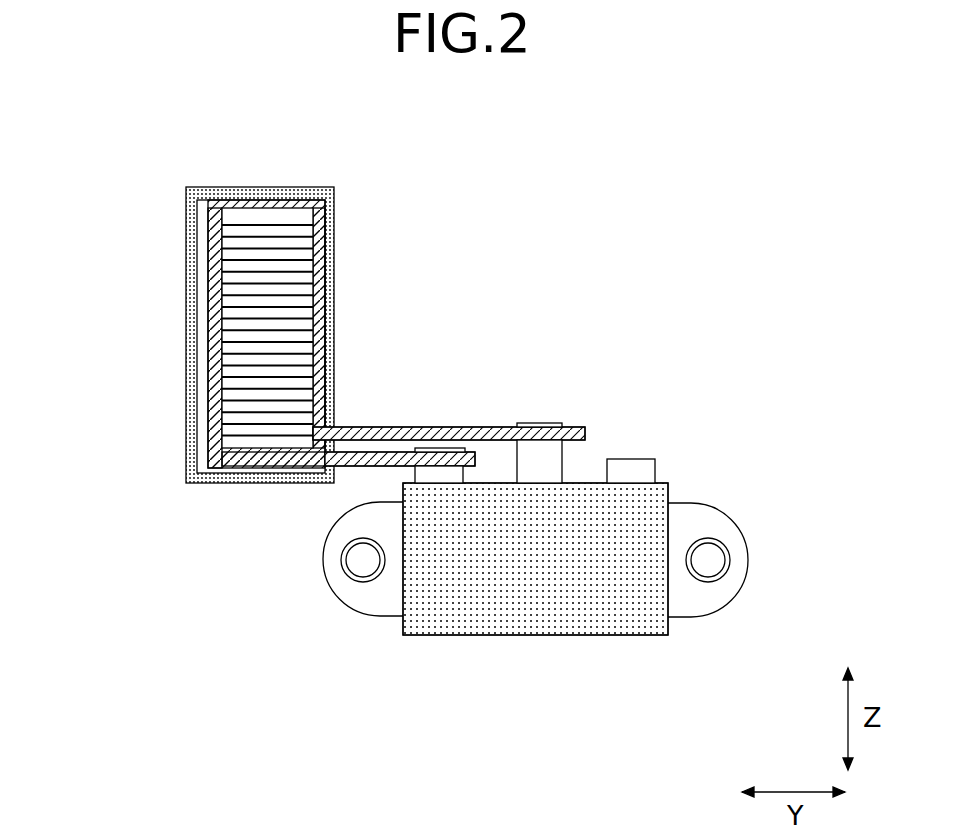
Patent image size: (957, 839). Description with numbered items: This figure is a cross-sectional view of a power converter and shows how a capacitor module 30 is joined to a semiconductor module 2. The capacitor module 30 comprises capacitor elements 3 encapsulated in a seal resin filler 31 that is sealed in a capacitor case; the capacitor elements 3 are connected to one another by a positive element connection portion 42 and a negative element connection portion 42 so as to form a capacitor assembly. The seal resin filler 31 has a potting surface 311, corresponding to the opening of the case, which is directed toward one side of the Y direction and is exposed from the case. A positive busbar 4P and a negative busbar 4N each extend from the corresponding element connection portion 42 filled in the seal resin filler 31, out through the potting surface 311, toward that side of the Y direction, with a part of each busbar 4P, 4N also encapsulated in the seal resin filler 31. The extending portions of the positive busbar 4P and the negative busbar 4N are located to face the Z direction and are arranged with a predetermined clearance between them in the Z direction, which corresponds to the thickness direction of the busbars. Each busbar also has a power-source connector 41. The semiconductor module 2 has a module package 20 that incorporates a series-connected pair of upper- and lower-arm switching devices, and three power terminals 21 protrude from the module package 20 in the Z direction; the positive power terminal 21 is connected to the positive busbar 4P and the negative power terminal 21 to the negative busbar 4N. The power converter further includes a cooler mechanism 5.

The semiconductor module 2 is at (535, 598).
The module package 20 is at (483, 598).
The power terminal 21 is at (415, 475).
The capacitor element 3 is at (250, 232).
The capacitor module 30 is at (319, 312).
The seal resin filler 31 is at (337, 205).
The potting surface 311 is at (337, 295).
The negative busbar 4N is at (358, 452).
The positive busbar 4P is at (492, 427).
The power-source connector 41 is at (438, 450).
The element connection portion 42 is at (318, 258).
The cooler mechanism 5 is at (698, 518).